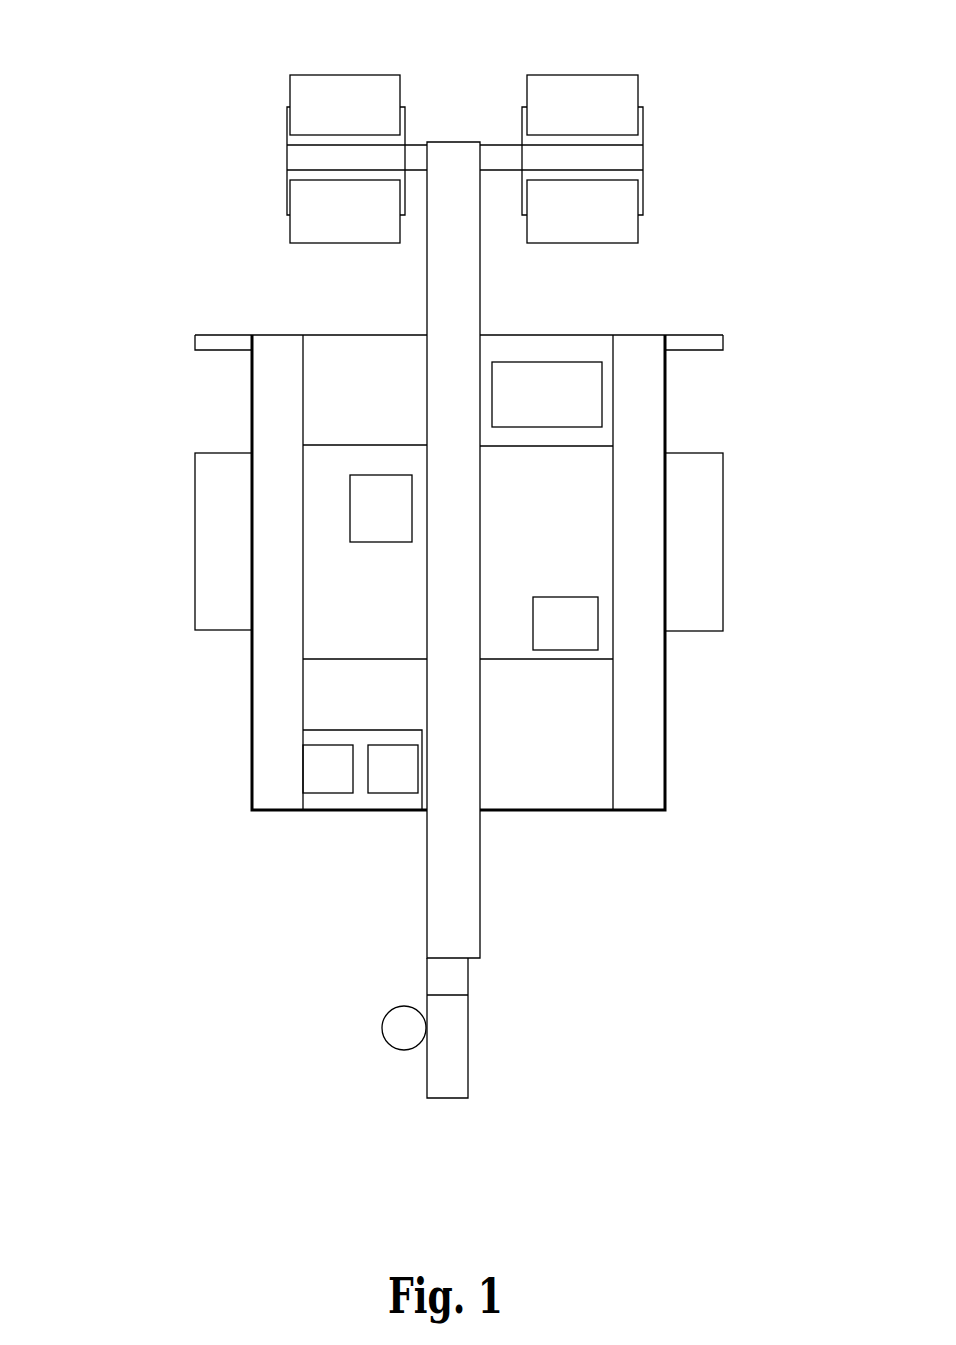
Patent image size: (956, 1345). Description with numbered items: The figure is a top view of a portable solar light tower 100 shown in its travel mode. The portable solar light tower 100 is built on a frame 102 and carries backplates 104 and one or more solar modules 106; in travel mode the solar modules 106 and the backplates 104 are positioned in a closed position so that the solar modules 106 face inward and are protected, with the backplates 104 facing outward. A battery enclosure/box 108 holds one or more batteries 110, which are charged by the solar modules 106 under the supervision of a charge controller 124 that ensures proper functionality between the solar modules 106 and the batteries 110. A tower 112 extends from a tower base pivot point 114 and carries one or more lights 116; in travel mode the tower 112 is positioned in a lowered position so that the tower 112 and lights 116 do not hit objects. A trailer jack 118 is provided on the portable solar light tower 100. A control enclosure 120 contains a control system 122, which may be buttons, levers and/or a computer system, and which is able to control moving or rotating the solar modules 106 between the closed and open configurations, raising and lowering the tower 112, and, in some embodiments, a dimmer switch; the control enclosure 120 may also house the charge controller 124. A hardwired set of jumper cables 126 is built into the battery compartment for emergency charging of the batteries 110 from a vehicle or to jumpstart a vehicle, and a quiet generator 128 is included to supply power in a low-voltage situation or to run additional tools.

The portable solar light tower 100 is at (155, 25).
The frame 102 is at (562, 798).
The backplates 104 is at (665, 768).
The solar modules 106 is at (653, 400).
The battery enclosure/box 108 is at (325, 613).
The batteries 110 is at (372, 490).
The tower 112 is at (427, 268).
The tower base pivot point 114 is at (460, 979).
The lights 116 is at (620, 97).
The trailer jack 118 is at (402, 1040).
The control enclosure 120 is at (398, 810).
The control system 122 is at (375, 788).
The charge controller 124 is at (310, 770).
The jumper cables 126 is at (590, 638).
The generator 128 is at (563, 380).